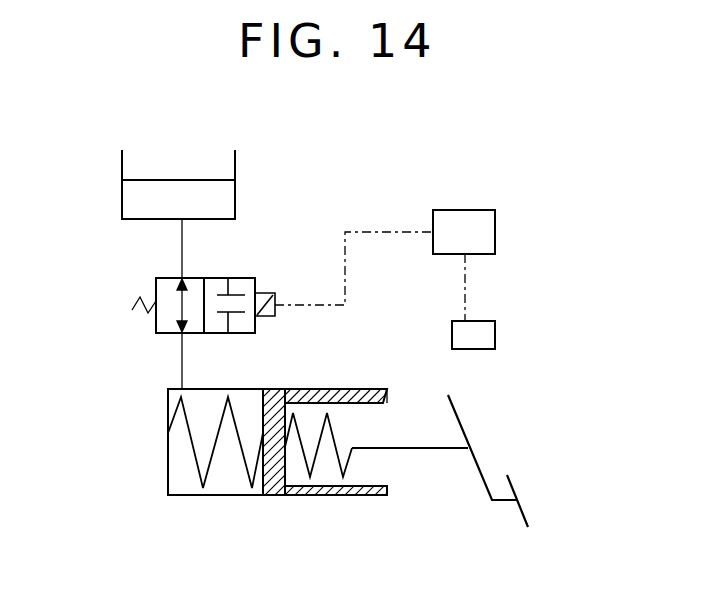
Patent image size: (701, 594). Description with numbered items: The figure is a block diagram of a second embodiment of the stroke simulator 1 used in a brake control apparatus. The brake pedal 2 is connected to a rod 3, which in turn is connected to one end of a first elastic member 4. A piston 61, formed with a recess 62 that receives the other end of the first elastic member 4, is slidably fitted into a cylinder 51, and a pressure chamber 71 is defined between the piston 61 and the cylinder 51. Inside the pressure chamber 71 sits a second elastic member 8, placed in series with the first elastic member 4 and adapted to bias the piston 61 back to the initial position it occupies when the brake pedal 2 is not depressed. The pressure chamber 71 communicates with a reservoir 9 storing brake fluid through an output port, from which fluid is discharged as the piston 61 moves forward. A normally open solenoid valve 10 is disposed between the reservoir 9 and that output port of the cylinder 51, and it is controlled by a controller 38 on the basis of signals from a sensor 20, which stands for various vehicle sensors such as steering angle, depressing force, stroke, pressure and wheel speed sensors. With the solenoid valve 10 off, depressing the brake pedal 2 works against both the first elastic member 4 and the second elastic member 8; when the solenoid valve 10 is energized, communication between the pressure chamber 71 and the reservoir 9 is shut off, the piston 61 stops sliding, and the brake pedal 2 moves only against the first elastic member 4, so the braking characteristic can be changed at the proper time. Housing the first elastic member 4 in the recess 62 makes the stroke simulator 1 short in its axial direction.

The stroke simulator 1 is at (265, 447).
The brake pedal 2 is at (517, 508).
The rod 3 is at (437, 450).
The first elastic member 4 is at (292, 475).
The second elastic member 8 is at (196, 462).
The reservoir 9 is at (237, 198).
The solenoid valve 10 is at (213, 277).
The sensor 20 is at (495, 330).
The controller 38 is at (495, 222).
The cylinder 51 is at (198, 496).
The piston 61 is at (350, 480).
The recess 62 is at (373, 482).
The pressure chamber 71 is at (237, 483).